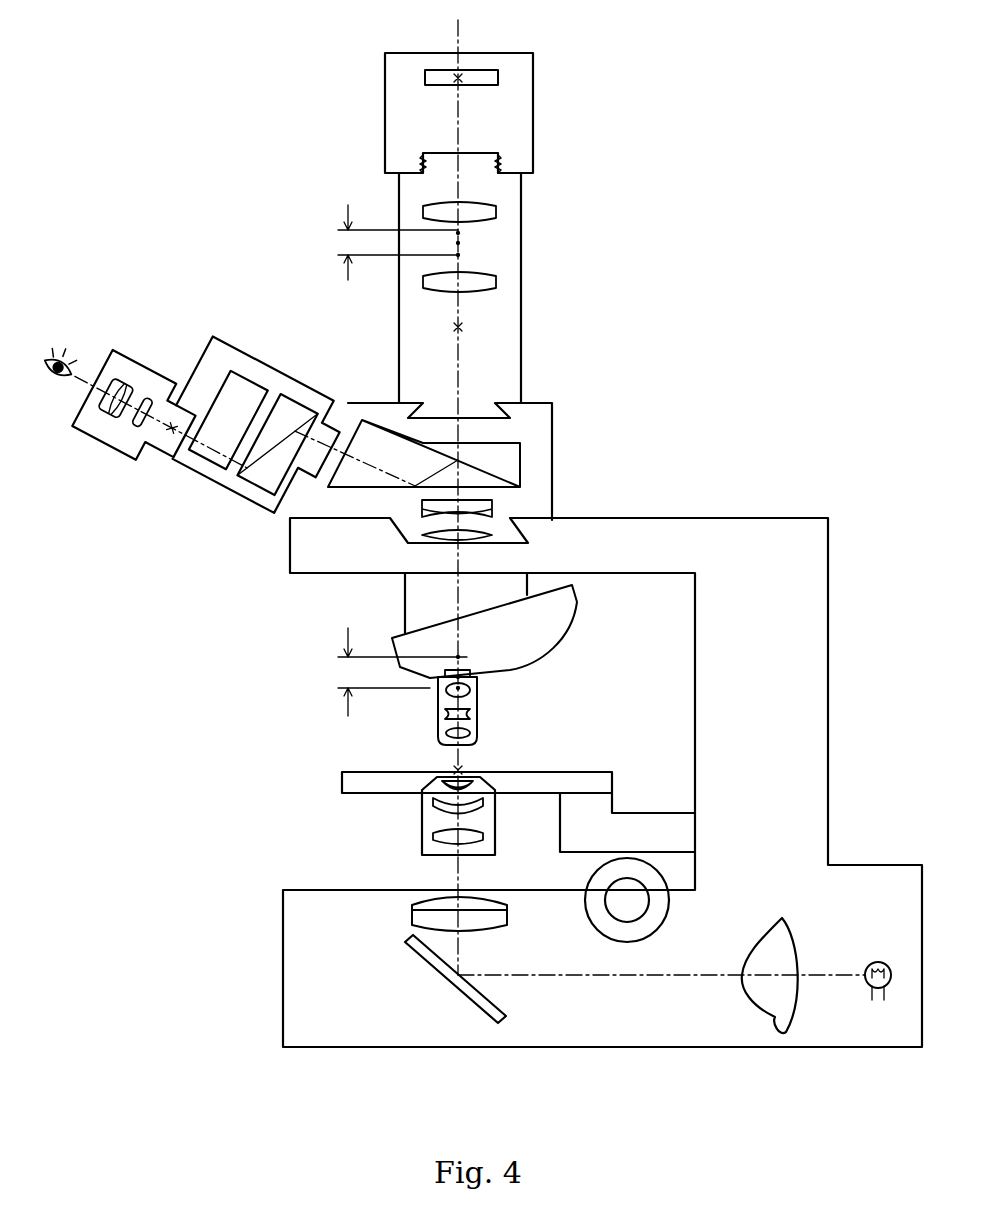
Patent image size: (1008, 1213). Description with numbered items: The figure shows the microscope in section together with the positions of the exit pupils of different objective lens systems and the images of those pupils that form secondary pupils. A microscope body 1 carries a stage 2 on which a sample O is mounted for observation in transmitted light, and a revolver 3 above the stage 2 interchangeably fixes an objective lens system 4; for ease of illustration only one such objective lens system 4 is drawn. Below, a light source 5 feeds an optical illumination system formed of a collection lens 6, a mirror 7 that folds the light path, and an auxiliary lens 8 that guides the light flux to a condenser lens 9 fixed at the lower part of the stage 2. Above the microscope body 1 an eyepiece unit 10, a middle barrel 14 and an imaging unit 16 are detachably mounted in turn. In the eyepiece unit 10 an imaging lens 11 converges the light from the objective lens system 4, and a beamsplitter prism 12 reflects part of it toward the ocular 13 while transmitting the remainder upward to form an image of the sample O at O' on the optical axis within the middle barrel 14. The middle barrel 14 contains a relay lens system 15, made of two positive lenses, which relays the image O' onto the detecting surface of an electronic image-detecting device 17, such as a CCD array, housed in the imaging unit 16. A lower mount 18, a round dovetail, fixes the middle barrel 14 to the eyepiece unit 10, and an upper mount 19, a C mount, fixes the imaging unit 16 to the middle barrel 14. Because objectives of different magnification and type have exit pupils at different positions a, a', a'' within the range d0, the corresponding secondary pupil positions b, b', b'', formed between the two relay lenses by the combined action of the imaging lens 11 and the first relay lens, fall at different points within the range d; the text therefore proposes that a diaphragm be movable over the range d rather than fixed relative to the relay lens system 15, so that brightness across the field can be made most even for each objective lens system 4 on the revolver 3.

The microscope body 1 is at (722, 535).
The stage 2 is at (342, 782).
The revolver 3 is at (405, 633).
The objective lens system 4 is at (438, 723).
The light source 5 is at (880, 1000).
The collection lens 6 is at (778, 1012).
The mirror 7 is at (492, 1020).
The auxiliary lens 8 is at (426, 903).
The condenser lens 9 is at (422, 820).
The eyepiece unit 10 is at (540, 455).
The imaging lens 11 is at (496, 505).
The beamsplitter prism 12 is at (366, 430).
The ocular 13 is at (102, 443).
The middle barrel 14 is at (521, 350).
The relay lens system 15 is at (478, 244).
The imaging unit 16 is at (533, 98).
The electronic image-detecting device 17 is at (486, 75).
The lower mount 18 is at (521, 405).
The upper mount 19 is at (500, 160).
The sample O is at (490, 755).
The sample image O' is at (487, 325).
The exit pupil a is at (490, 686).
The exit pupil a' is at (501, 672).
The exit pupil a'' is at (489, 701).
The secondary pupil position b is at (511, 242).
The secondary pupil position b' is at (506, 220).
The secondary pupil position b'' is at (508, 266).
The range of secondary pupil positions d is at (398, 242).
The range of exit pupil positions d0 is at (399, 672).